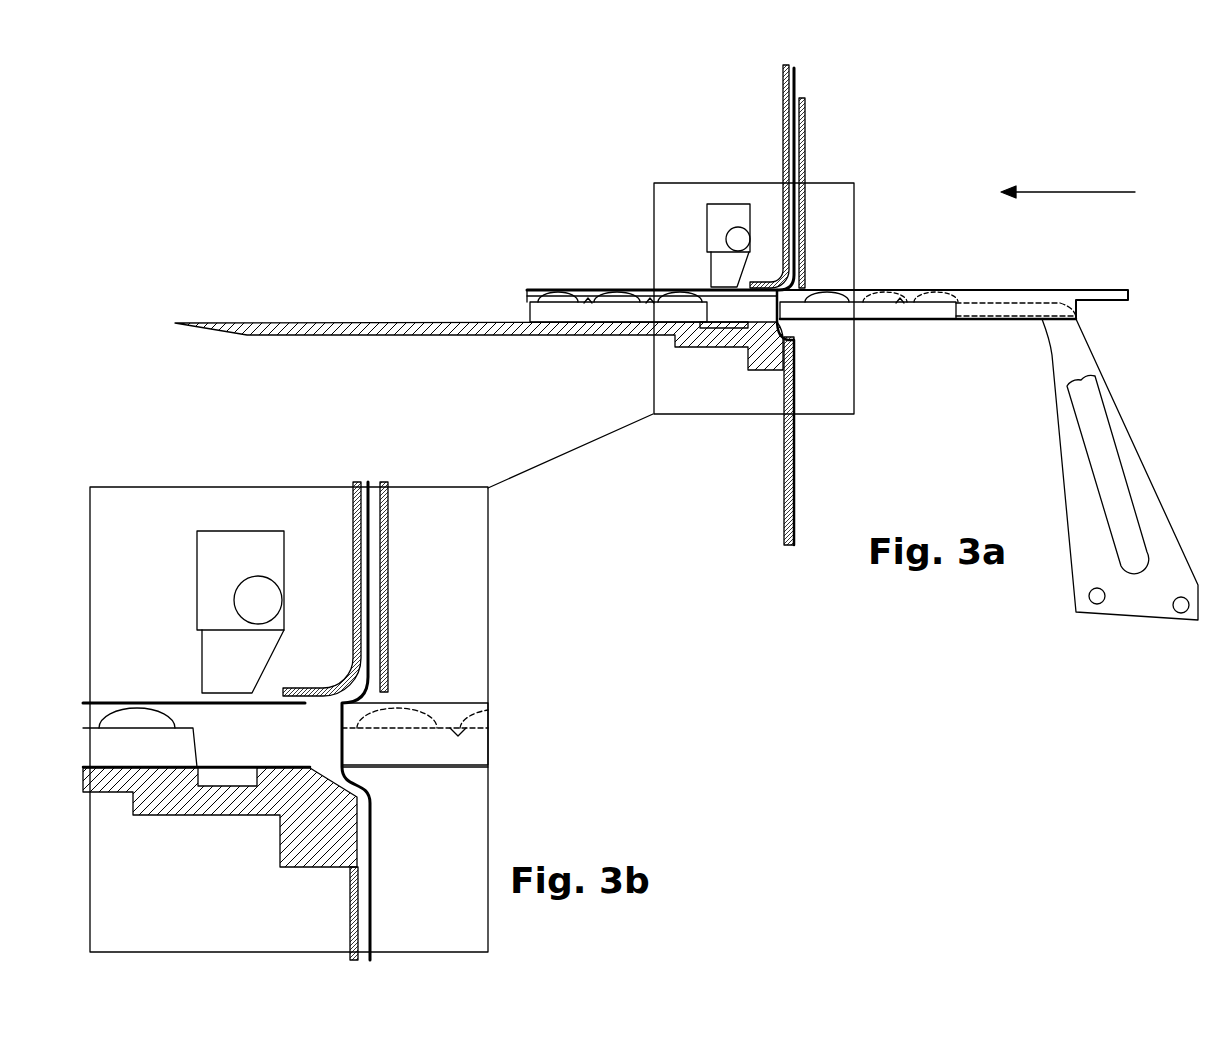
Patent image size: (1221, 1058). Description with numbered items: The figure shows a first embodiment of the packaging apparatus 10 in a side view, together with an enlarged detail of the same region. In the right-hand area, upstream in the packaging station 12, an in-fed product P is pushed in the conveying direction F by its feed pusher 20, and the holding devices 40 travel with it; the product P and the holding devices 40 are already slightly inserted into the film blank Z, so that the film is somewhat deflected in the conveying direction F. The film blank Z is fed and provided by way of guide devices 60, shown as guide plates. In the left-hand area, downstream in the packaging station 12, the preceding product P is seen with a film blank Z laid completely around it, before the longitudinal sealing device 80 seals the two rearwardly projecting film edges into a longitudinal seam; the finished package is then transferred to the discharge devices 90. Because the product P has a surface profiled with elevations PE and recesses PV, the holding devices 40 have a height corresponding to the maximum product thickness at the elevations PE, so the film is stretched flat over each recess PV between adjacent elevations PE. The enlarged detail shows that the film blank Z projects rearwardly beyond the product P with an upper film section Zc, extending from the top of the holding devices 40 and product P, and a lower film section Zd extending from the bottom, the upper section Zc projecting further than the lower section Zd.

In FIG. 3A, the packaging apparatus 10 is at (970, 118).
In FIG. 3A, the packaging station 12 is at (832, 262).
In FIG. 3A, the feed pusher 20 is at (1085, 360).
In FIG. 3A, the holding device 40 is at (1053, 290).
In FIG. 3A, the guide device 60 is at (783, 100).
In FIG. 3B, the guide device 60 is at (353, 548).
In FIG. 3A, the longitudinal sealing device 80 is at (722, 215).
In FIG. 3B, the longitudinal sealing device 80 is at (222, 548).
In FIG. 3A, the discharge device 90 is at (363, 322).
In FIG. 3A, the conveying direction F is at (1068, 174).
In FIG. 3A, the product P is at (618, 322).
In FIG. 3B, the product P is at (113, 748).
In FIG. 3A, the elevation PE is at (558, 298).
In FIG. 3B, the elevation PE is at (134, 718).
In FIG. 3A, the recess PV is at (586, 302).
In FIG. 3B, the recess PV is at (460, 732).
In FIG. 3A, the film blank Z is at (797, 75).
In FIG. 3B, the film blank Z is at (368, 480).
In FIG. 3A, the lower film section Zd is at (708, 323).
In FIG. 3B, the lower film section Zd is at (220, 770).
In FIG. 3A, the upper film section Zc is at (758, 292).
In FIG. 3B, the upper film section Zc is at (250, 707).